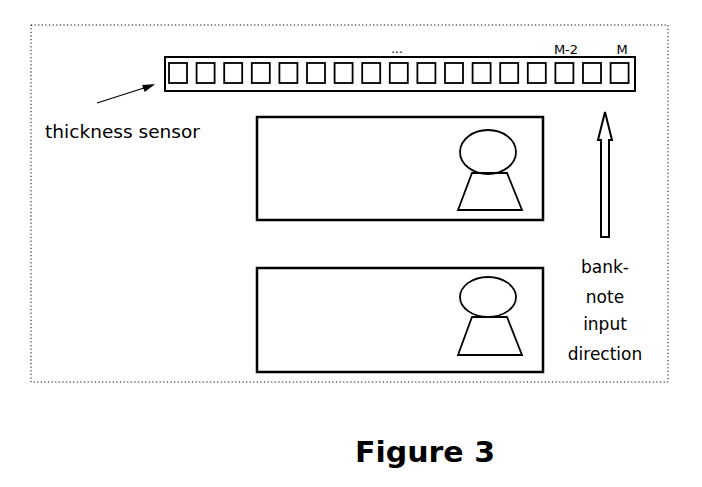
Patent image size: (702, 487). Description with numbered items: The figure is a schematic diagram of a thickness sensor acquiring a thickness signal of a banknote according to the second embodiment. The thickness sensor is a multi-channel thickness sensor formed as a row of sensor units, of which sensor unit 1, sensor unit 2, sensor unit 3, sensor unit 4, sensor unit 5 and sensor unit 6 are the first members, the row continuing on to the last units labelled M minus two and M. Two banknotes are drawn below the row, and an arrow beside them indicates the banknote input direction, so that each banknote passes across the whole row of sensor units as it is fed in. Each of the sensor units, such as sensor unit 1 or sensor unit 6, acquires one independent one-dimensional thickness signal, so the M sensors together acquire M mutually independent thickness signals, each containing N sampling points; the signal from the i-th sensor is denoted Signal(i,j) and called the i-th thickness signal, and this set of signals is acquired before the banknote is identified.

The sensor unit 1 is at (178, 61).
The sensor unit 2 is at (206, 61).
The sensor unit 3 is at (233, 61).
The sensor unit 4 is at (261, 61).
The sensor unit 5 is at (288, 61).
The sensor unit 6 is at (316, 61).